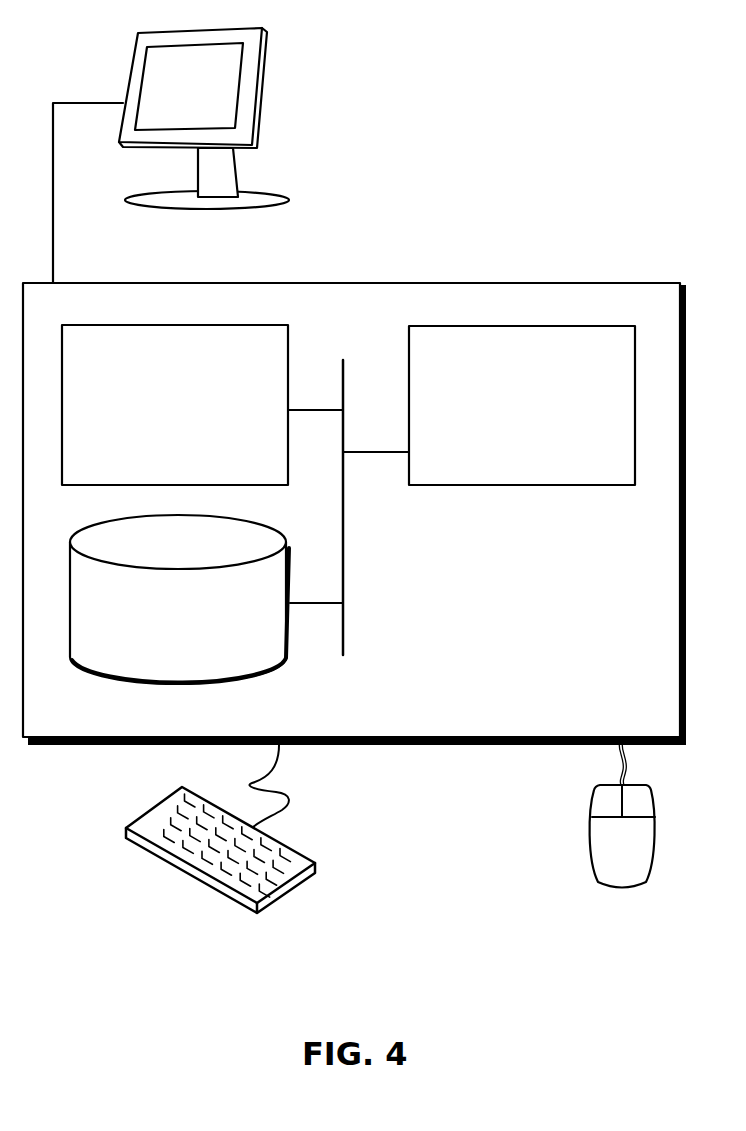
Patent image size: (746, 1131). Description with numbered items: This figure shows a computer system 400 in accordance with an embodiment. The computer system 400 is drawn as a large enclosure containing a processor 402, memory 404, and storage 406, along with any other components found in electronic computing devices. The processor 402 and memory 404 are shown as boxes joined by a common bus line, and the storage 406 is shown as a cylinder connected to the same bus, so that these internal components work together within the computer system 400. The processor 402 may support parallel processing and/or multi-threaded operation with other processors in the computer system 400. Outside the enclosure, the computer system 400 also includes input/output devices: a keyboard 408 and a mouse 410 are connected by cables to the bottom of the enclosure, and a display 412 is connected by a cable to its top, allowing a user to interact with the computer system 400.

The computer system 400 is at (398, 260).
The processor 402 is at (503, 418).
The memory 404 is at (153, 415).
The storage 406 is at (160, 626).
The keyboard 408 is at (143, 850).
The mouse 410 is at (601, 856).
The display 412 is at (171, 155).